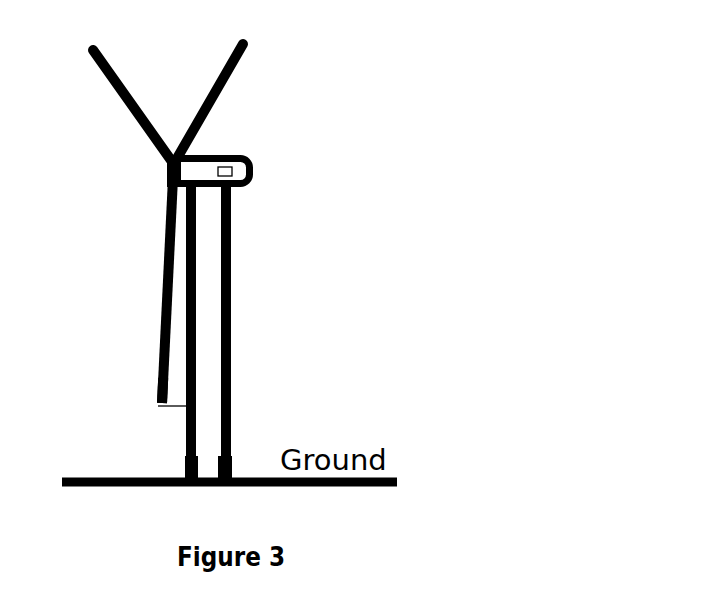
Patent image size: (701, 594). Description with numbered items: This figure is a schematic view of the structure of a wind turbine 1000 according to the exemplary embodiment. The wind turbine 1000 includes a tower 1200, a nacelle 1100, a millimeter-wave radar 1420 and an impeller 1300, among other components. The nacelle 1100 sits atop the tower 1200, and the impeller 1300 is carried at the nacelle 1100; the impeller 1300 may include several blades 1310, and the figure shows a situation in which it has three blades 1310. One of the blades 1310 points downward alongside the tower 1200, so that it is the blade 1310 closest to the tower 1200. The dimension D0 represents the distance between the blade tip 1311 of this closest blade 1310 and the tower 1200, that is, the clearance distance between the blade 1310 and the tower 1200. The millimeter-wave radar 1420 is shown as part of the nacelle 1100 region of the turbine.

The wind turbine 1000 is at (236, 306).
The nacelle 1100 is at (254, 168).
The tower 1200 is at (210, 362).
The impeller 1300 is at (172, 160).
The blade 1310 is at (229, 89).
The blade tip 1311 is at (152, 405).
The millimeter-wave radar 1420 is at (233, 157).
The clearance distance D0 is at (177, 407).